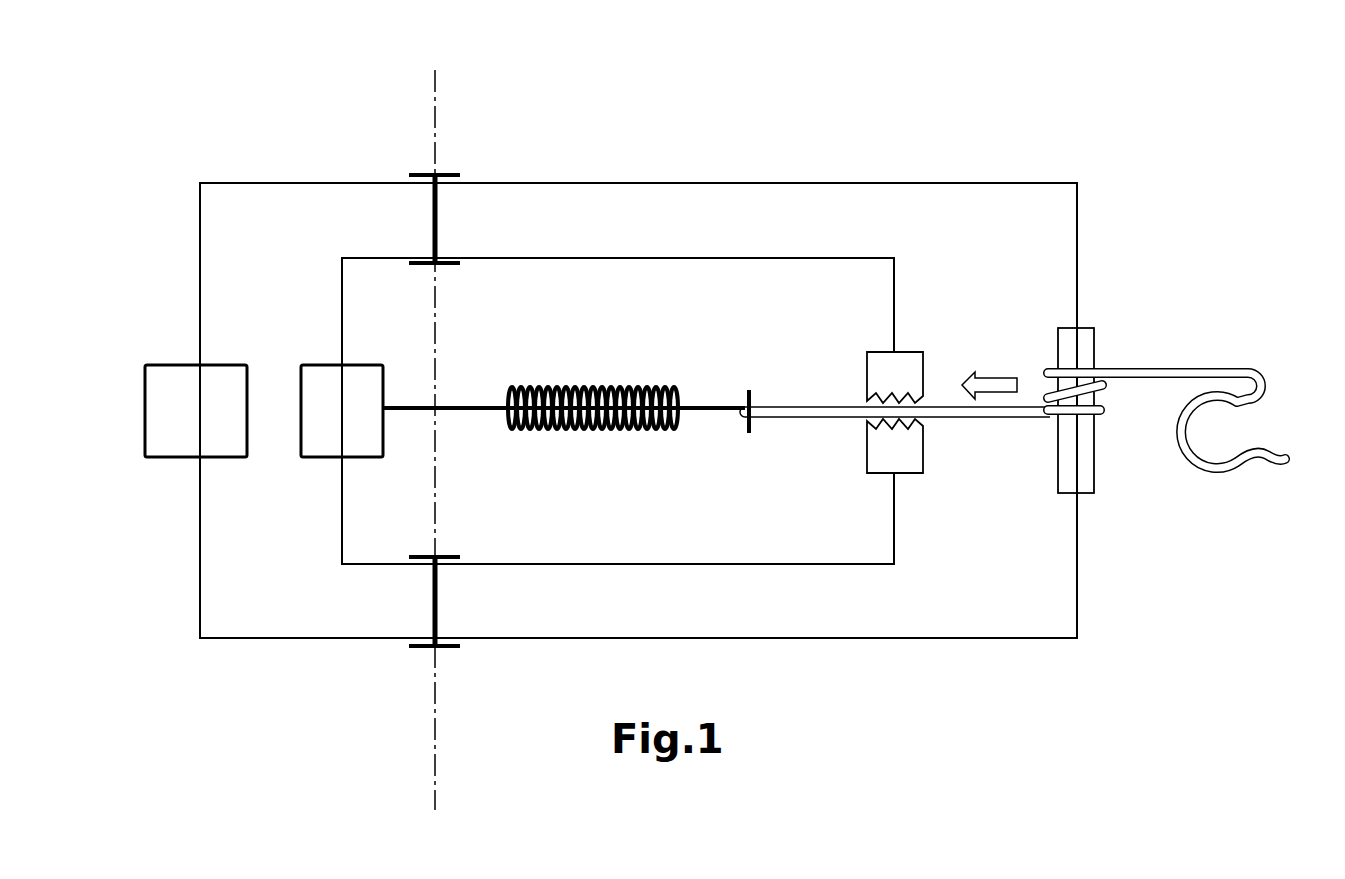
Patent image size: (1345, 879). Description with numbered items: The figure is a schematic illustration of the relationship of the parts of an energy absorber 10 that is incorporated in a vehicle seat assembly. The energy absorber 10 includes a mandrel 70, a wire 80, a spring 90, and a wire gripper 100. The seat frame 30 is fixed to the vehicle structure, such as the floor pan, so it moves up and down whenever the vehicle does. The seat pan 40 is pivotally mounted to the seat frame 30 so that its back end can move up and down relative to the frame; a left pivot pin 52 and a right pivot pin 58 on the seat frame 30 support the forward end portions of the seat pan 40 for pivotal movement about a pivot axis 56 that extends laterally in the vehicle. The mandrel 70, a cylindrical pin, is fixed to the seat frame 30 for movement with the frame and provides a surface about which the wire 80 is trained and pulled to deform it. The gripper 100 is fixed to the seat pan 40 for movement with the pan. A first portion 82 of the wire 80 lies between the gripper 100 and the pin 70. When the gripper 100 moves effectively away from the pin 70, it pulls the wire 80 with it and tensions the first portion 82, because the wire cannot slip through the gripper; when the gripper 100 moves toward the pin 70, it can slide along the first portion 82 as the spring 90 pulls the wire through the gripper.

The energy absorber 10 is at (322, 686).
The seat frame 30 is at (170, 462).
The seat pan 40 is at (326, 460).
The left pivot pin 52 is at (437, 600).
The pivot axis 56 is at (436, 118).
The right pivot pin 58 is at (437, 222).
The mandrel 70 is at (1100, 338).
The wire 80 is at (812, 424).
The first portion of the wire 82 is at (782, 411).
The spring 90 is at (595, 385).
The wire gripper 100 is at (864, 371).